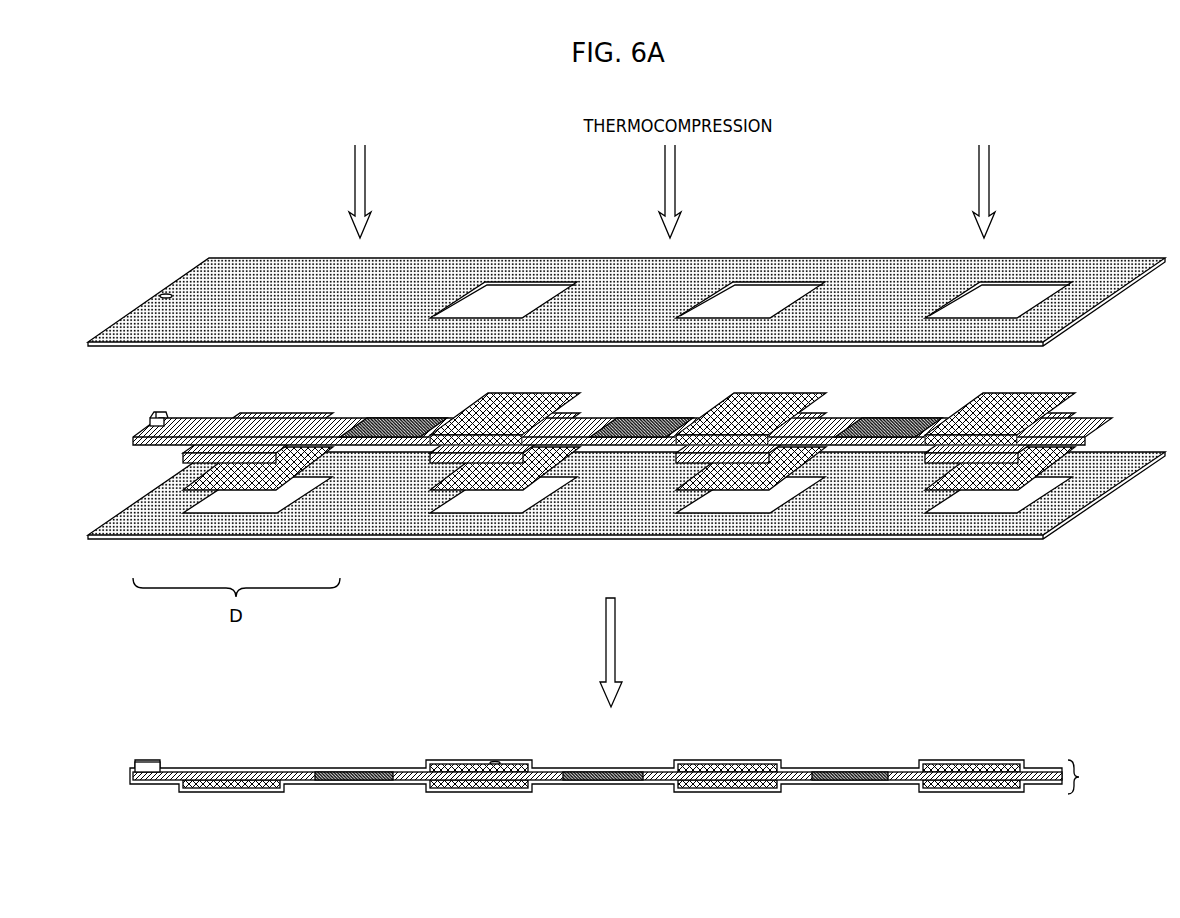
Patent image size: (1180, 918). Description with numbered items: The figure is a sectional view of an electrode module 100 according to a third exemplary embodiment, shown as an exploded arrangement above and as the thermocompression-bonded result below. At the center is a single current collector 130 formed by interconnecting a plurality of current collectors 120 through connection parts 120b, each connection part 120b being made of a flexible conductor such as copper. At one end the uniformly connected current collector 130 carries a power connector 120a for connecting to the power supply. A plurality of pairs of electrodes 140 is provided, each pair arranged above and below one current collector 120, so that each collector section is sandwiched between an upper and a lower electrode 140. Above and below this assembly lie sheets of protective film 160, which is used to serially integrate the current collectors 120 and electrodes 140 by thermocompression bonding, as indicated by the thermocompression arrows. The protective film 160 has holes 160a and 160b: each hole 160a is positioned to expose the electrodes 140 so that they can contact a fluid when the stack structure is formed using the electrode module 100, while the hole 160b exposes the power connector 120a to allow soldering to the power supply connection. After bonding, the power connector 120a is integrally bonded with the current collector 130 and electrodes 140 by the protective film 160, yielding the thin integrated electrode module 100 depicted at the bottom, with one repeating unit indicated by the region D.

The electrode module 100 is at (1091, 777).
The current collector 120 is at (229, 418).
The power connector 120a is at (156, 411).
The connection part 120b is at (406, 420).
The single current collector 130 is at (1093, 404).
The electrode 140 is at (516, 398).
The protective film 160 is at (903, 262).
The hole 160a is at (514, 297).
The hole 160b is at (166, 294).